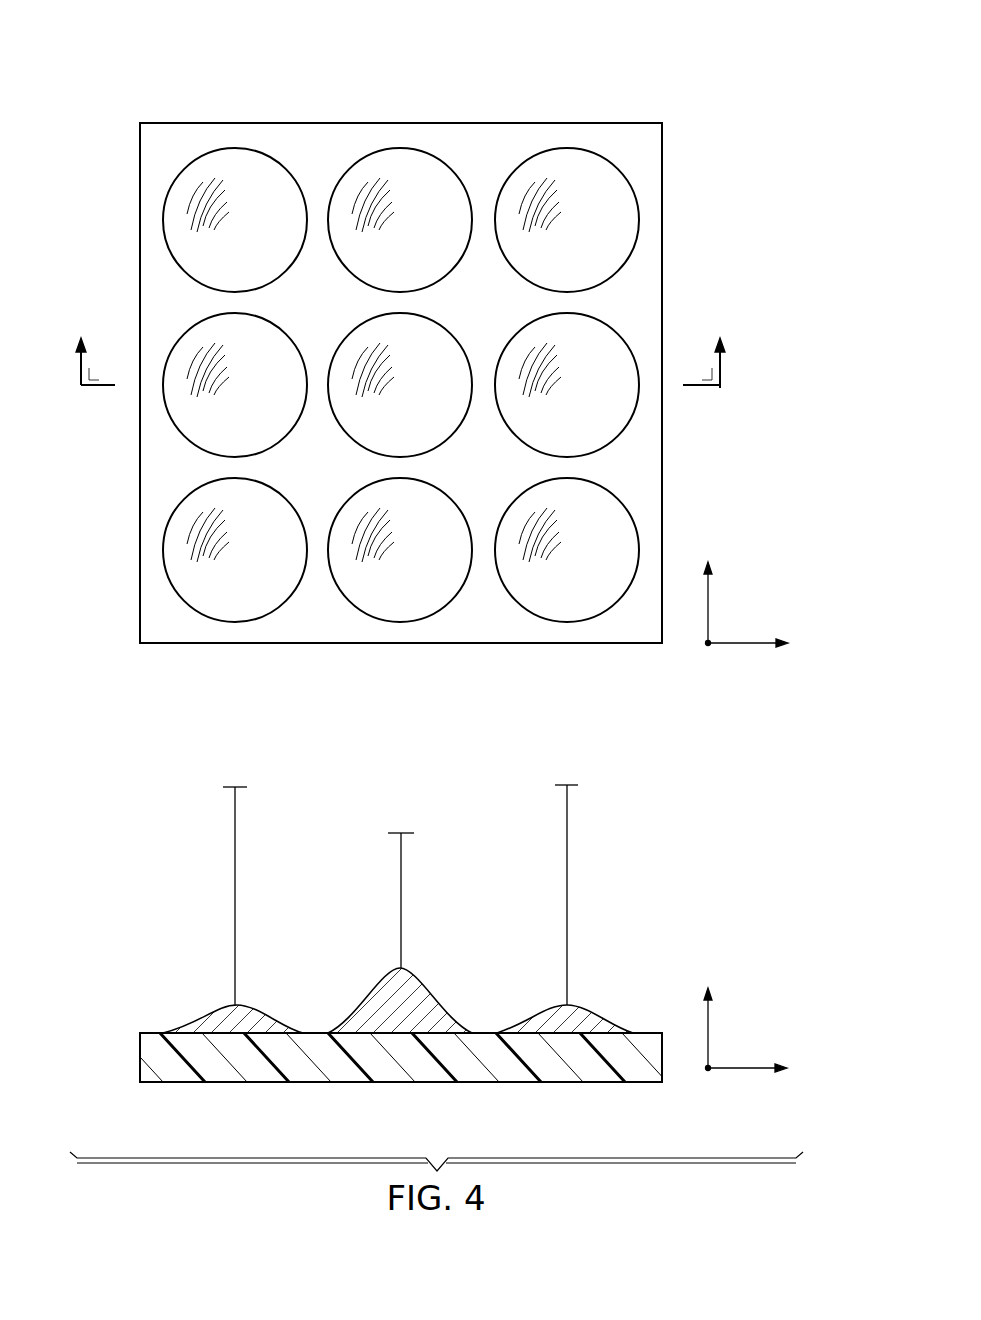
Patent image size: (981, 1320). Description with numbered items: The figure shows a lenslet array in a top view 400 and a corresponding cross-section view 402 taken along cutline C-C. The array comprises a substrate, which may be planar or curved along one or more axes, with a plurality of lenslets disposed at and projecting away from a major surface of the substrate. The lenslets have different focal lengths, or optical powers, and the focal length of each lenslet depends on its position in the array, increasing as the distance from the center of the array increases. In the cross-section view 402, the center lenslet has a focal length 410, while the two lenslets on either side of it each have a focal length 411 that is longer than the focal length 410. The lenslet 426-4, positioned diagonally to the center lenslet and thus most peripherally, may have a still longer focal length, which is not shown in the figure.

The top view 400 is at (488, 65).
The cross-section view 402 is at (644, 822).
The focal length 410 is at (401, 902).
The focal length 411 is at (235, 895).
The lenslet 426-4 is at (235, 148).